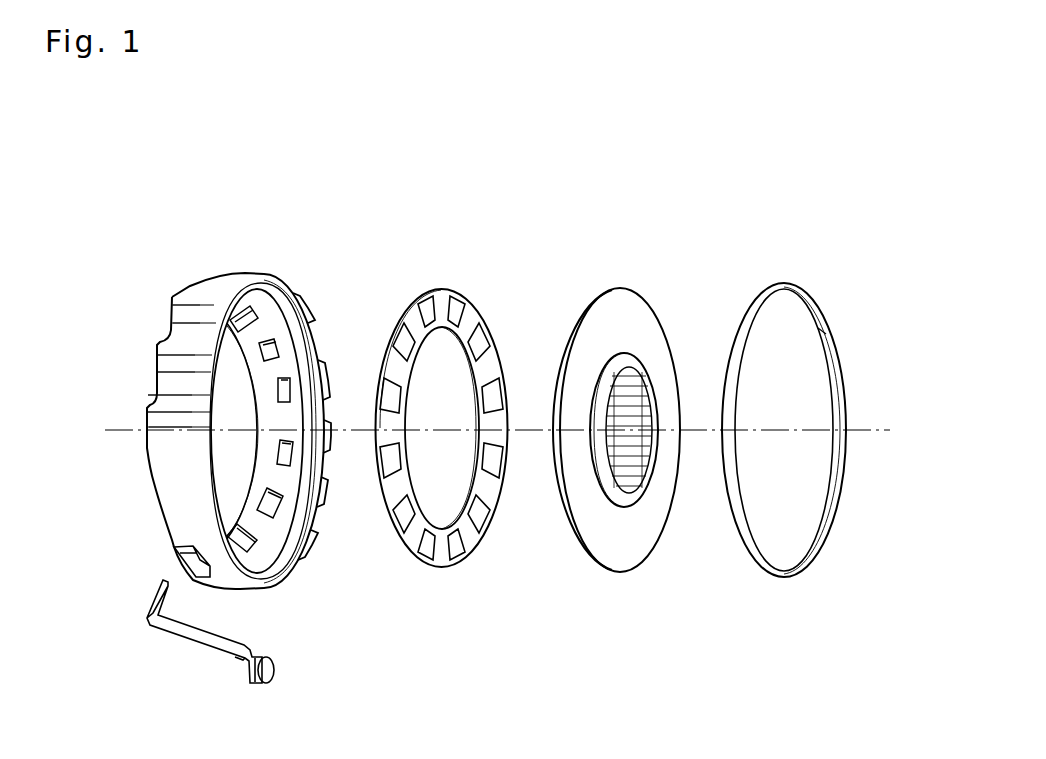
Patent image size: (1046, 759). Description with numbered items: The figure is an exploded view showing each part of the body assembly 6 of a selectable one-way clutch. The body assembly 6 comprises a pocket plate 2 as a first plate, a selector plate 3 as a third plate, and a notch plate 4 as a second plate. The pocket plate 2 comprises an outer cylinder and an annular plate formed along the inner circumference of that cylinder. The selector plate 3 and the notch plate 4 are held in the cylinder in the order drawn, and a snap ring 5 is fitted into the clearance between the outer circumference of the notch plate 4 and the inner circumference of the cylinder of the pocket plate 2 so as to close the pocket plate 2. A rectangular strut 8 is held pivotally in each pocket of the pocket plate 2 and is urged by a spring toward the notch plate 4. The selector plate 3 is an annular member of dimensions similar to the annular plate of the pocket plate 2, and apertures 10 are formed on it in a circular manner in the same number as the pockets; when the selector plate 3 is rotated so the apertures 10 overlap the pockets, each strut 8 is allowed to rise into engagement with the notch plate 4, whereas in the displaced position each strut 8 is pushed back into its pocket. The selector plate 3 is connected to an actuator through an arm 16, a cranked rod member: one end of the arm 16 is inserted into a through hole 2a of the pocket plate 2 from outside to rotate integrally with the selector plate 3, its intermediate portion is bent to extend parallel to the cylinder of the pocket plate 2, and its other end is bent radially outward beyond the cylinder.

The pocket plate 2 is at (322, 576).
The through hole 2a is at (186, 556).
The selector plate 3 is at (456, 452).
The notch plate 4 is at (622, 572).
The snap ring 5 is at (785, 578).
The body assembly 6 is at (358, 632).
The strut 8 is at (292, 387).
The apertures 10 is at (430, 315).
The arm 16 is at (193, 660).